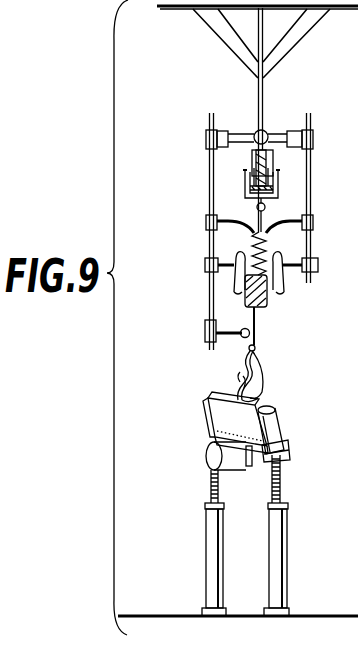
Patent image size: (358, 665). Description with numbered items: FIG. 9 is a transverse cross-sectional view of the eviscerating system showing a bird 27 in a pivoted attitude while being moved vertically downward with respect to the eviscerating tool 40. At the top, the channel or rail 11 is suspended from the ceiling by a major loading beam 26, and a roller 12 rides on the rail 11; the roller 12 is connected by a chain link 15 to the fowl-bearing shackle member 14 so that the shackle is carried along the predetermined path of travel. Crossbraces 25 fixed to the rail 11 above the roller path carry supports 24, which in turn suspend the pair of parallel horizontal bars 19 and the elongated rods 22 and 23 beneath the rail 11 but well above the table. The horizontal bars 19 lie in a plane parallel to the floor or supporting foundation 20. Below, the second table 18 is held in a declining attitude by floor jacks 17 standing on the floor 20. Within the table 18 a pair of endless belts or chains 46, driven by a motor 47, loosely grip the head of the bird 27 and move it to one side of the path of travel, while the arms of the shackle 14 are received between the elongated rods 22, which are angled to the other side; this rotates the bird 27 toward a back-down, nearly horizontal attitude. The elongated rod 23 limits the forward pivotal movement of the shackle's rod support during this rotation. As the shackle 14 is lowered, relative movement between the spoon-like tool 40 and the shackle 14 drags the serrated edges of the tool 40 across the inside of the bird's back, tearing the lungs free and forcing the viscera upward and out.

The channel or rail 11 is at (284, 150).
The wheels or rollers 12 is at (251, 168).
The shackle member 14 is at (269, 254).
The chain link 15 is at (268, 197).
The floor jacks 17 is at (272, 565).
The second table 18 is at (289, 452).
The horizontal bars 19 is at (248, 193).
The floor or supporting foundation 20 is at (355, 616).
The elongated rods 22 is at (278, 282).
The elongated rod 23 is at (242, 337).
The supports 24 is at (311, 194).
The crossbraces 25 is at (243, 133).
The major loading beams 26 is at (263, 108).
The bird 27 is at (261, 378).
The eviscerating tool or spoon 40 is at (251, 366).
The endless belts or chains 46 is at (275, 412).
The motor 47 is at (225, 470).